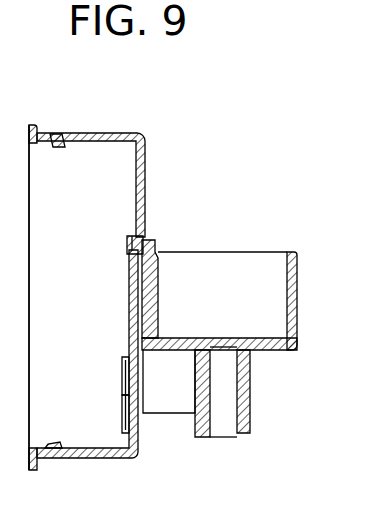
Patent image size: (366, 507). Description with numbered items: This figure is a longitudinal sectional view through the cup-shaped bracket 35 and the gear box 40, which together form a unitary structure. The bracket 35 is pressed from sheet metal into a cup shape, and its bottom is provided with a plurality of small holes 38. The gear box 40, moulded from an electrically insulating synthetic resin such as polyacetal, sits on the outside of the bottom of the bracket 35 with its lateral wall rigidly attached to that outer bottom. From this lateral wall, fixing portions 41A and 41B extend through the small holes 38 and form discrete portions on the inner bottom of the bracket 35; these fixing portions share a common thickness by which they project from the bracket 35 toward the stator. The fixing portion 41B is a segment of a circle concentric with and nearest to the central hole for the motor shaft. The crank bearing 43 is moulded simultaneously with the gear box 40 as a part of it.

The cup-shaped bracket 35 is at (101, 133).
The small holes 38 is at (146, 170).
The gear box 40 is at (292, 253).
The fixing portion 41A is at (124, 418).
The fixing portion 41B is at (124, 358).
The crank bearing 43 is at (227, 428).